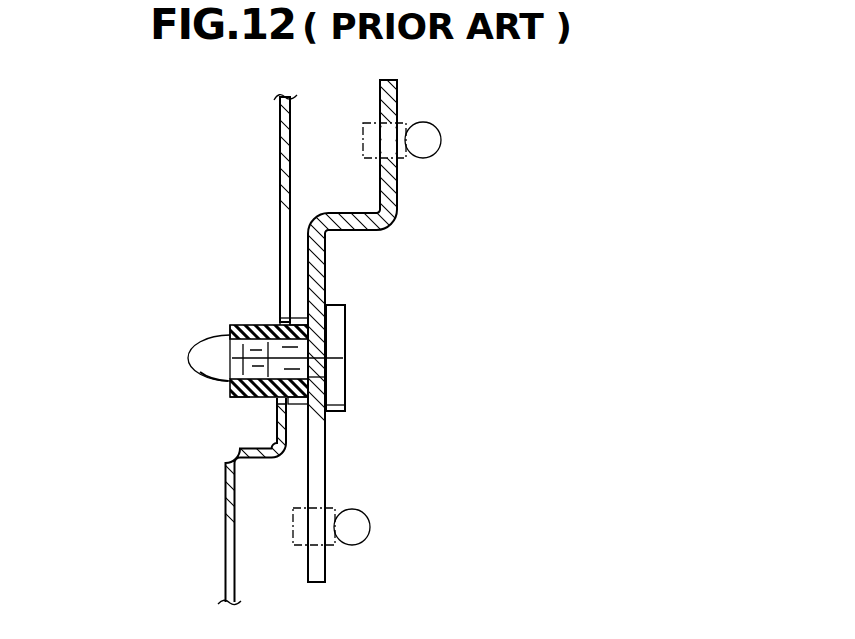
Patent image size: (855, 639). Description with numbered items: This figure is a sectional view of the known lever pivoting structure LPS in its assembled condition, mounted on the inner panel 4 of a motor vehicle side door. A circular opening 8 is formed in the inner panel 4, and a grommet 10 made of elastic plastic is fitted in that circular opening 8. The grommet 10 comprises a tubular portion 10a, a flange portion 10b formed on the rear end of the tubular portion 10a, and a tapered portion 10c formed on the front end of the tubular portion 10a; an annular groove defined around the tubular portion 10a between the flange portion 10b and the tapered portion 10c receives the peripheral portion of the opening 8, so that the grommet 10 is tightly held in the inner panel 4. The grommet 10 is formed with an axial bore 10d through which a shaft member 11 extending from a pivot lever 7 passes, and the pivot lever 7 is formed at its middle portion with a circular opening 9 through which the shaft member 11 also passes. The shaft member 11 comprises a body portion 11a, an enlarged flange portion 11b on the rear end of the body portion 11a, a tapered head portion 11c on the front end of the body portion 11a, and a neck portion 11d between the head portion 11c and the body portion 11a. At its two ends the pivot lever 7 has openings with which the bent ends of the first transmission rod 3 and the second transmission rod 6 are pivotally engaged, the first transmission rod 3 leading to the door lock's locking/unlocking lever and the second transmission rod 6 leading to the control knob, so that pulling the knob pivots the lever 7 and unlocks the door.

The first transmission rod 3 is at (365, 522).
The inner panel 4 is at (280, 153).
The second transmission rod 6 is at (432, 128).
The pivot lever 7 is at (398, 203).
The circular opening 8 is at (272, 323).
The circular opening 9 is at (344, 341).
The grommet 10 is at (250, 403).
The tubular portion 10a is at (273, 408).
The flange portion 10b is at (282, 322).
The tapered portion 10c is at (242, 400).
The axial bore 10d is at (328, 377).
The shaft member 11 is at (348, 309).
The body portion 11a is at (343, 358).
The enlarged flange portion 11b is at (345, 410).
The tapered head portion 11c is at (200, 358).
The neck portion 11d is at (238, 325).
The lever pivoting structure LPS is at (446, 251).